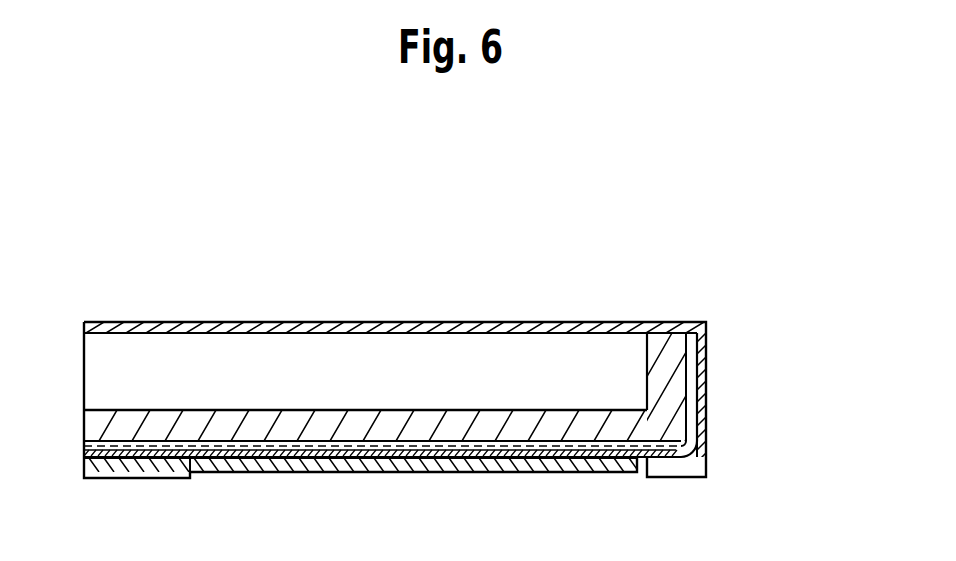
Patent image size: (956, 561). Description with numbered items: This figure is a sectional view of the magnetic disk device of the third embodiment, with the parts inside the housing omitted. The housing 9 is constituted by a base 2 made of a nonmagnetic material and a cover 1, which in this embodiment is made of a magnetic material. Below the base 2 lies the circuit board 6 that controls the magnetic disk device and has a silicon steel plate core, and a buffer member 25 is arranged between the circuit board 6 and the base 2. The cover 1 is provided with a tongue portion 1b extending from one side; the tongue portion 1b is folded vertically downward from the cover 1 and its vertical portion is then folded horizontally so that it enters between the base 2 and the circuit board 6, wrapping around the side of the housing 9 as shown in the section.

The cover 1 is at (241, 322).
The tongue portion 1b is at (700, 415).
The base 2 is at (672, 368).
The housing 9 is at (433, 322).
The circuit board 6 is at (367, 472).
The buffer member 25 is at (240, 472).